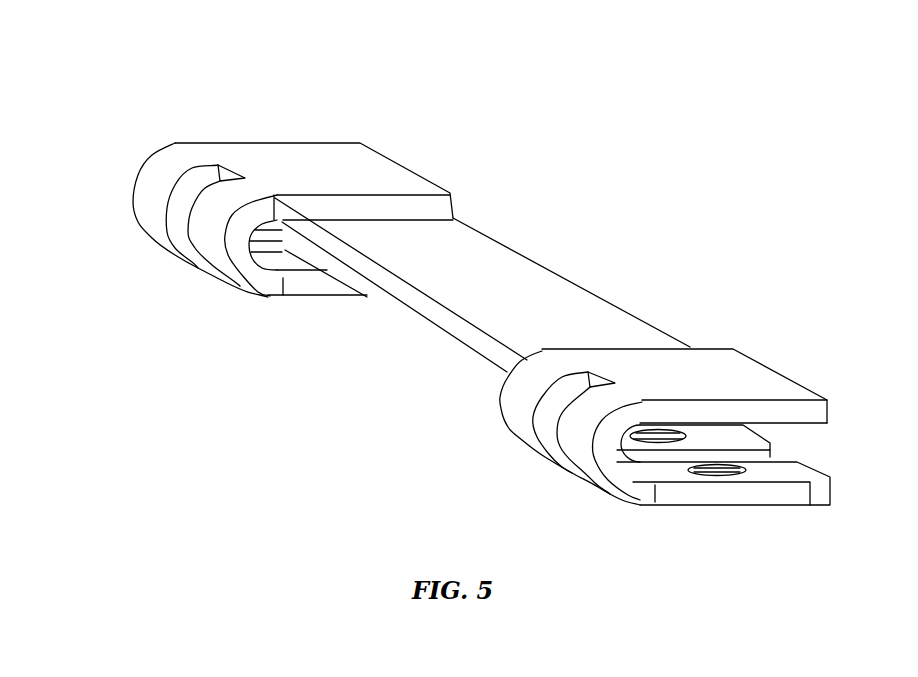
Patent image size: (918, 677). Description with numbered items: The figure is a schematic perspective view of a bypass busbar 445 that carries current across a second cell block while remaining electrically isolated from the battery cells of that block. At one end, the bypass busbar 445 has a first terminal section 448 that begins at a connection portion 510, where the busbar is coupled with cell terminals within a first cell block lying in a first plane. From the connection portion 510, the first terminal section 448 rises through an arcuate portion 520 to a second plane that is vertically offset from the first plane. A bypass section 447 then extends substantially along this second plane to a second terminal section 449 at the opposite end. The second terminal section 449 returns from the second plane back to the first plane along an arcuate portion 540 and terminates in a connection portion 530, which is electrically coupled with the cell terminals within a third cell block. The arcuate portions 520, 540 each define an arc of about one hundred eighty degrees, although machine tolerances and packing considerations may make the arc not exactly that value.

The bypass busbar 445 is at (150, 100).
The bypass section 447 is at (553, 270).
The first terminal section 448 is at (344, 142).
The second terminal section 449 is at (763, 374).
The connection portion 510 is at (323, 293).
The arcuate portion 520 is at (132, 188).
The connection portion 530 is at (740, 502).
The arcuate portion 540 is at (512, 415).